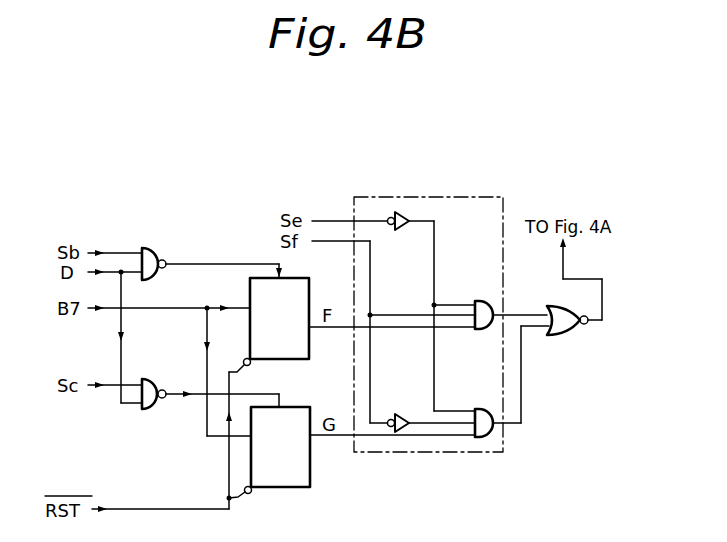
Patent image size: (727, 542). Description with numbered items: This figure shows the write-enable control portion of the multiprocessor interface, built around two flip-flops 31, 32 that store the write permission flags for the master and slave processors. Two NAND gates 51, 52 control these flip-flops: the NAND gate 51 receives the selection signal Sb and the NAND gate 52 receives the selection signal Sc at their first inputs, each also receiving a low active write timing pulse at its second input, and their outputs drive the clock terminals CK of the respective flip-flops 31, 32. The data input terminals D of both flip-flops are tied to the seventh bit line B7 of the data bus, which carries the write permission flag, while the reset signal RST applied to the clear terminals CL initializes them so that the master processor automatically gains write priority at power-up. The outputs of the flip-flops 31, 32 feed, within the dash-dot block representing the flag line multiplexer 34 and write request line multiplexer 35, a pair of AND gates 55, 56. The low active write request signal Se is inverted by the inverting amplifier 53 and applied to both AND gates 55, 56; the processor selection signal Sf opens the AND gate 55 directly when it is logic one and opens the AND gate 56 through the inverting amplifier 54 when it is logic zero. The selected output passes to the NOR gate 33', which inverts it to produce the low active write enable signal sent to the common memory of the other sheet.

The flip-flop 31 is at (309, 292).
The flip-flop 32 is at (310, 470).
The logic gate 33' is at (574, 310).
The flag line multiplexer 34 is at (443, 354).
The write request line multiplexer 35 is at (489, 453).
The NAND gate 51 is at (150, 247).
The NAND gate 52 is at (156, 411).
The inverting amplifier 53 is at (404, 229).
The inverting amplifier 54 is at (403, 412).
The AND gate 55 is at (483, 300).
The AND gate 56 is at (480, 407).